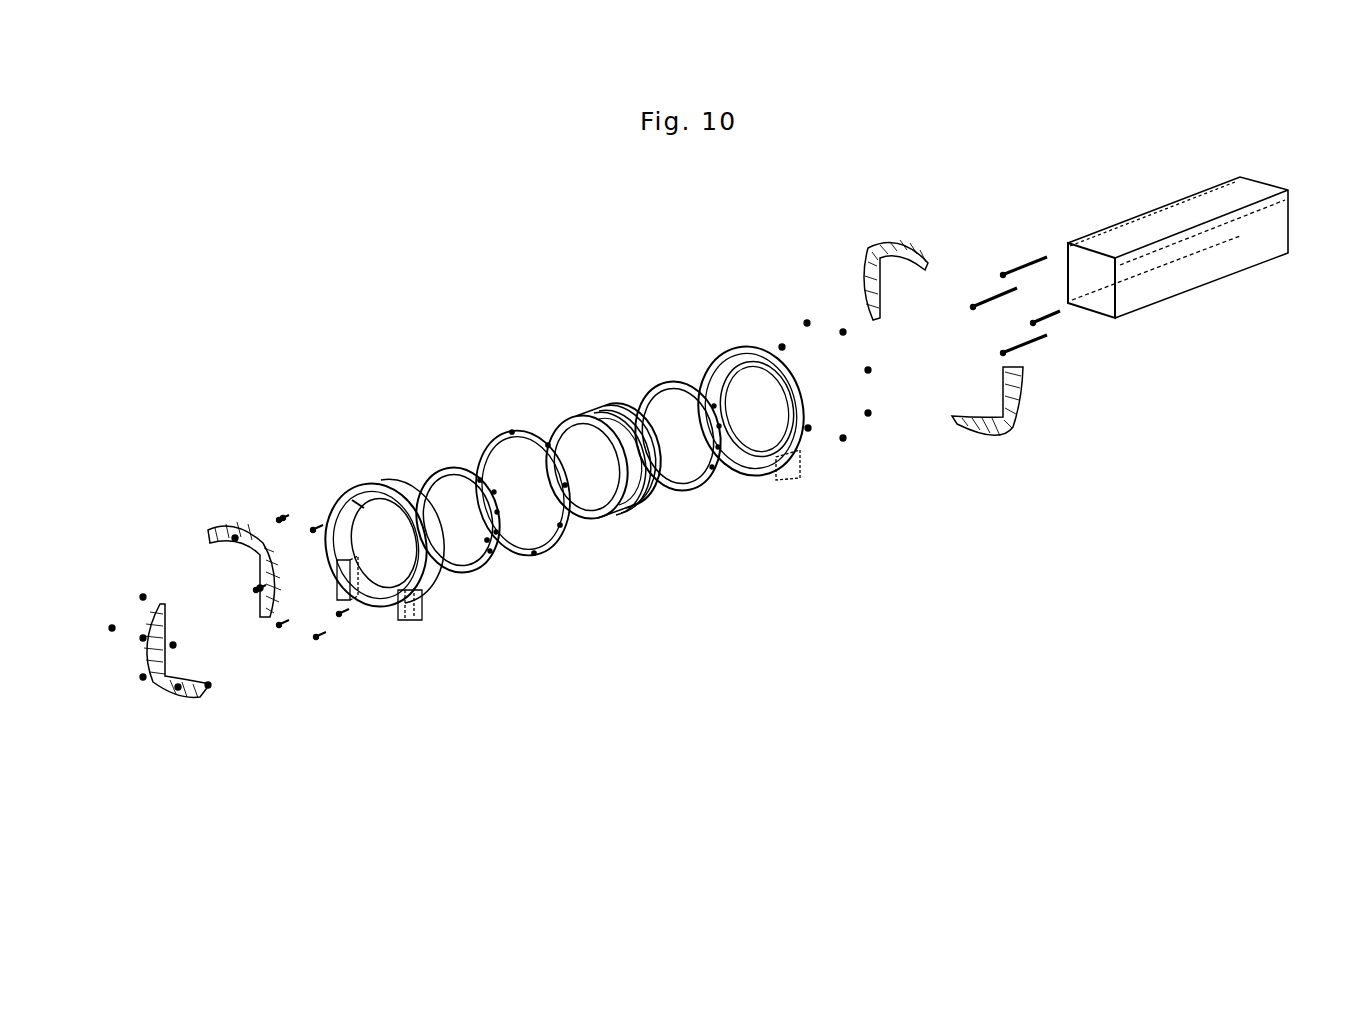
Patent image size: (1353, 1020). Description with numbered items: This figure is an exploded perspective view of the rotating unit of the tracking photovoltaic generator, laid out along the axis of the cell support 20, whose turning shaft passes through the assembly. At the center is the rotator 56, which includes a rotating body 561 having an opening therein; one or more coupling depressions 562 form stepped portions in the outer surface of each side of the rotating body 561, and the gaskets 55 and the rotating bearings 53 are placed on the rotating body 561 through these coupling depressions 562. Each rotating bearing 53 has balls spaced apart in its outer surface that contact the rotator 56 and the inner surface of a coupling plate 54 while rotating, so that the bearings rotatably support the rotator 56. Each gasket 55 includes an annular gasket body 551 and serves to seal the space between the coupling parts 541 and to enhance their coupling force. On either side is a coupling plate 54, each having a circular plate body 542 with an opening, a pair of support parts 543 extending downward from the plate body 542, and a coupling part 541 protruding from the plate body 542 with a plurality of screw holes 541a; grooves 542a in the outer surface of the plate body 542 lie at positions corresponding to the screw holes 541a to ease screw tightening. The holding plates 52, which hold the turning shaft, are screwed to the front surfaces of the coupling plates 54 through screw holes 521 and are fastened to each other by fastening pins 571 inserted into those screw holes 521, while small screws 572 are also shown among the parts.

The cell support 20 is at (1155, 218).
The holding plate 52 is at (566, 472).
The screw hole 521 is at (173, 690).
The rotating bearing 53 is at (487, 553).
The coupling plate 54 is at (571, 499).
The coupling part 541 is at (430, 582).
The screw hole 541a is at (358, 492).
The plate body 542 is at (413, 495).
The groove 542a is at (390, 608).
The support part 543 is at (428, 614).
The gasket 55 is at (520, 485).
The gasket body 551 is at (490, 440).
The rotator 56 is at (596, 450).
The rotating body 561 is at (606, 417).
The coupling depression 562 is at (593, 407).
The fastening pin 571 is at (1055, 318).
The fixing screws 572 is at (327, 638).